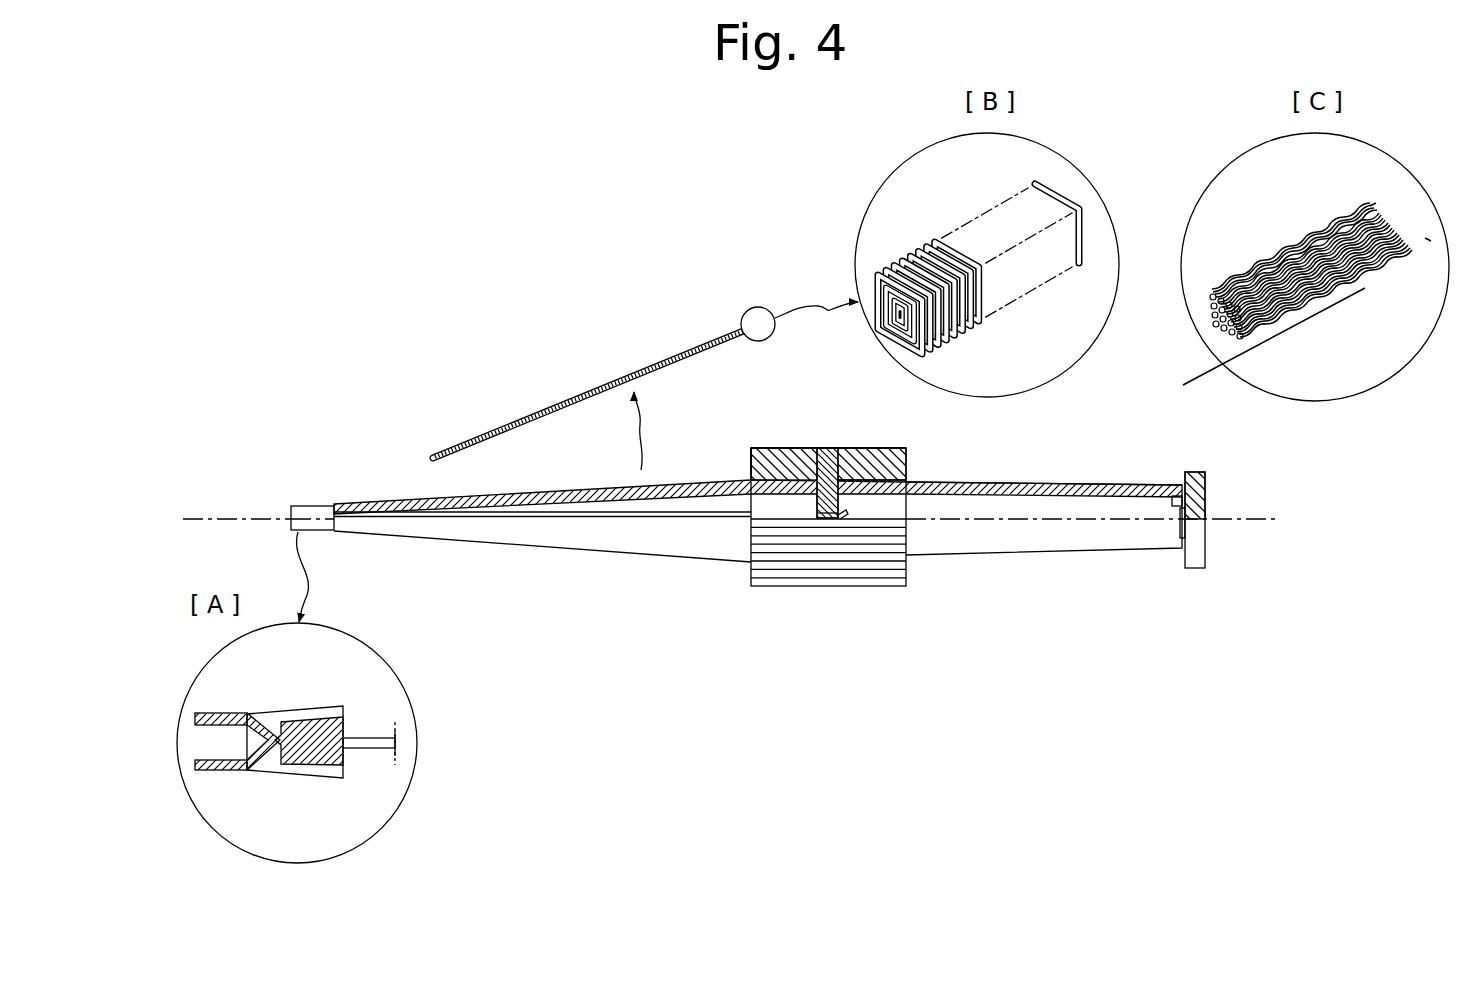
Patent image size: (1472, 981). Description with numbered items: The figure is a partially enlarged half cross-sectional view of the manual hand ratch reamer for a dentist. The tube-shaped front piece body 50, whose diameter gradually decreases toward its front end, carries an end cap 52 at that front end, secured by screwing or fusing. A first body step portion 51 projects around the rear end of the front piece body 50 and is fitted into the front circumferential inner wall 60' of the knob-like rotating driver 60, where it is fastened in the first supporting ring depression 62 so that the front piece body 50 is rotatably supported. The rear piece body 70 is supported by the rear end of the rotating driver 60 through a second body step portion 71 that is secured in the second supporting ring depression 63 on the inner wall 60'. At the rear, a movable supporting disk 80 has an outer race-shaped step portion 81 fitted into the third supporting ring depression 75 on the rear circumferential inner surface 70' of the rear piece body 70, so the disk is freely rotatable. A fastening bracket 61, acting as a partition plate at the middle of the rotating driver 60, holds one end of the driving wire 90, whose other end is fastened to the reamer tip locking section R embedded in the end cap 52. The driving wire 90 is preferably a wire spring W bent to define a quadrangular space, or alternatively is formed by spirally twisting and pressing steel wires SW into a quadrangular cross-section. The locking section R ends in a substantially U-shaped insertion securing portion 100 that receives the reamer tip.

The front piece body 50 is at (670, 540).
The first body step portion 51 is at (840, 476).
The end cap 52 is at (311, 505).
The rotating driver 60 is at (828, 562).
The circumferential inner wall of the rotating driver 60' is at (749, 431).
The fastening bracket 61 is at (812, 513).
The first supporting ring depression 62 is at (816, 447).
The second supporting ring depression 63 is at (858, 448).
The rear piece body 70 is at (1044, 569).
The rear circumferential inner surface of the rear piece body 70' is at (1044, 446).
The second body step portion 71 is at (866, 479).
The third supporting ring depression 75 is at (1176, 497).
The movable supporting disk 80 is at (1208, 475).
The step portion 81 is at (1178, 500).
The driving wire 90 is at (596, 388).
The wire spring W is at (917, 252).
The steel wires SW is at (1217, 326).
The reamer tip locking section R is at (347, 660).
The insertion securing portion 100 is at (197, 743).